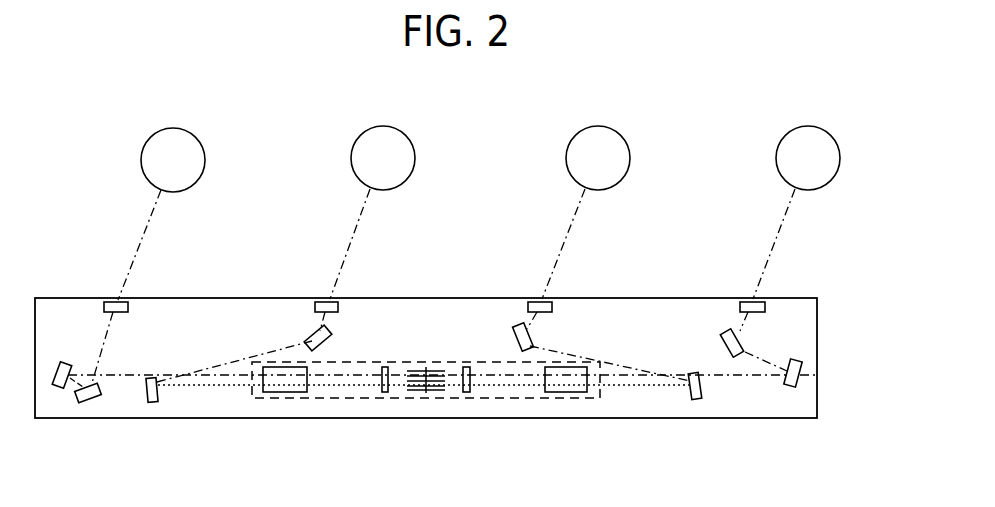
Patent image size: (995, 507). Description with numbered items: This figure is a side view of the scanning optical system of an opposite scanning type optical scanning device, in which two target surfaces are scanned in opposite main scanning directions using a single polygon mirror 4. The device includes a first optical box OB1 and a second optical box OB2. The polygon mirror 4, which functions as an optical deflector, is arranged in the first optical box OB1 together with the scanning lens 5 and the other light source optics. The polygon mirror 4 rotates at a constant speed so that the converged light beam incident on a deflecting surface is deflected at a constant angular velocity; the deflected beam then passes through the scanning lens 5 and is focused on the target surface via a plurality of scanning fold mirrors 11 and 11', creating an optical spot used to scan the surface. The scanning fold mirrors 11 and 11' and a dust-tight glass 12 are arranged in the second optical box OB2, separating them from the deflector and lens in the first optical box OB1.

The polygon mirror 4 is at (433, 346).
The scanning lens 5 is at (602, 390).
The scanning fold mirror 11 is at (714, 339).
The scanning fold mirror 11' is at (826, 368).
The dust-tight glass 12 is at (764, 311).
The first optical box OB1 is at (450, 396).
The second optical box OB2 is at (168, 418).